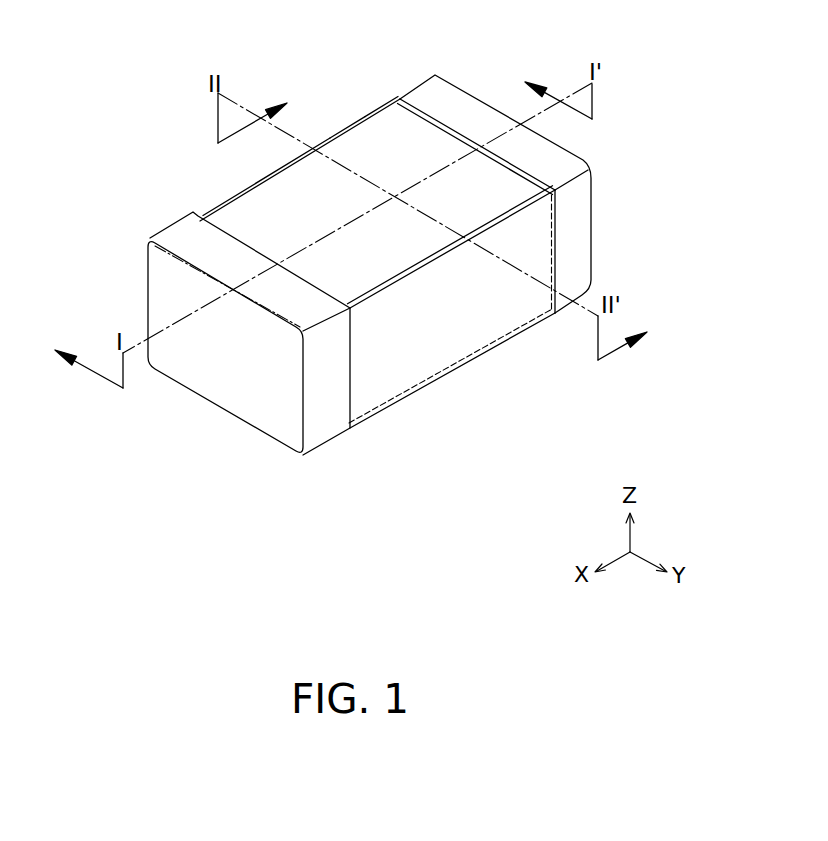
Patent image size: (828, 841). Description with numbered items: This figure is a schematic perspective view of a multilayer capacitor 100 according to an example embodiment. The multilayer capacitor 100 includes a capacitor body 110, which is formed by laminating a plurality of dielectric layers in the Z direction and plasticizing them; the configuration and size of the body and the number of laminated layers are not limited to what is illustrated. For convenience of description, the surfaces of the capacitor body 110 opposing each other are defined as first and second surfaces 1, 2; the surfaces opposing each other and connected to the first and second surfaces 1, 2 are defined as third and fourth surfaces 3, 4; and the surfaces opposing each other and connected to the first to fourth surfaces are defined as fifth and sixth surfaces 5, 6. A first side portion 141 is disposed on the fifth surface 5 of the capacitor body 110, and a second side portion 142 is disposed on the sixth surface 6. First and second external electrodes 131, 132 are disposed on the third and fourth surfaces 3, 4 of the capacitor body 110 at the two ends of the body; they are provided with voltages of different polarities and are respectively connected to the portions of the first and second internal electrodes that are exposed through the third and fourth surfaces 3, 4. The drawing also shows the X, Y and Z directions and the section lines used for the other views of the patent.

The multilayer capacitor 100 is at (199, 34).
The capacitor body 110 is at (366, 137).
The first surface 1 is at (453, 342).
The second surface 2 is at (240, 213).
The third surface 3 is at (226, 390).
The fourth surface 4 is at (573, 140).
The fifth surface 5 is at (505, 260).
The sixth surface 6 is at (387, 110).
The first external electrode 131 is at (330, 428).
The second external electrode 132 is at (578, 210).
The first side portion 141 is at (512, 287).
The second side portion 142 is at (330, 140).